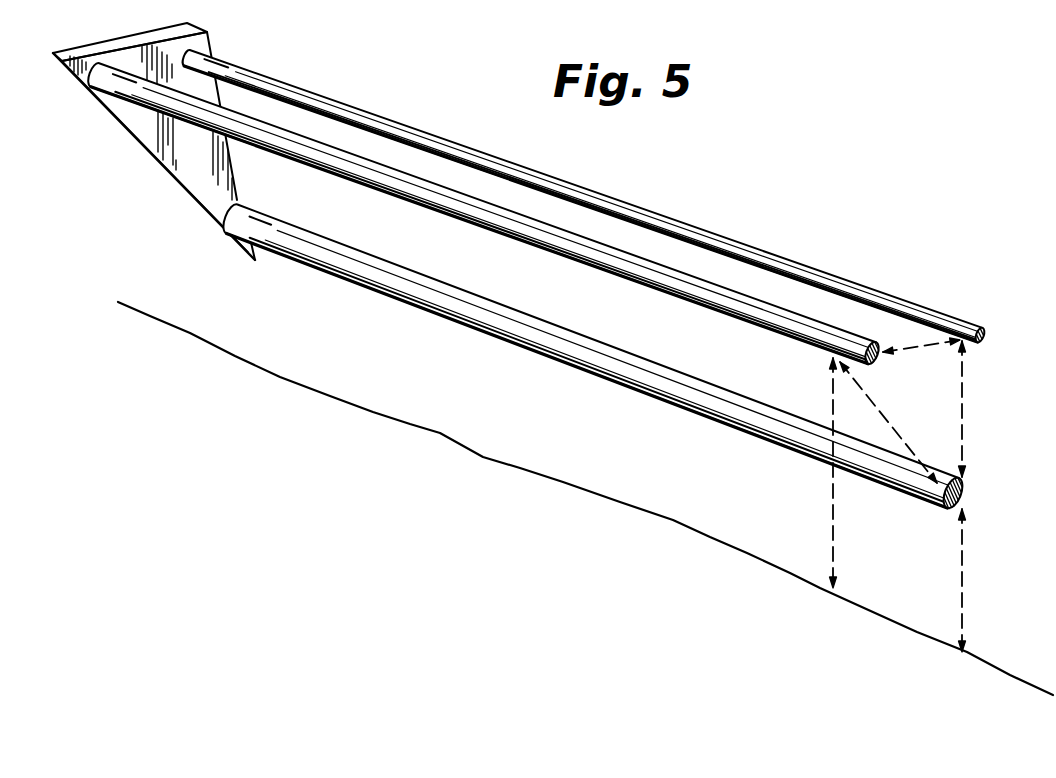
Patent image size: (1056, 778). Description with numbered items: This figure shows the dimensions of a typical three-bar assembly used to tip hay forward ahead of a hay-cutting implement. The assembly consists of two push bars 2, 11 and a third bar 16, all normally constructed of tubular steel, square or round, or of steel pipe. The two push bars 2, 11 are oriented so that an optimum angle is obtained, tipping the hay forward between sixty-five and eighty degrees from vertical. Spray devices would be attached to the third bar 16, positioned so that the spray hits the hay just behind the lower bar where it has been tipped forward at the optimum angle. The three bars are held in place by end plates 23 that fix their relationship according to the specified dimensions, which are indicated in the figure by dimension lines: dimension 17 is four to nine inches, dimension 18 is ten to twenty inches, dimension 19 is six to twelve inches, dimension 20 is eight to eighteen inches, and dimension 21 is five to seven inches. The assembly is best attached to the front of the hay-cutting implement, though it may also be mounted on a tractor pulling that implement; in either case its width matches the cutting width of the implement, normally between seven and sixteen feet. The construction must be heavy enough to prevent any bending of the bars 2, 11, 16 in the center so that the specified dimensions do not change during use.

The push bar 2 is at (593, 345).
The push bar 11 is at (477, 200).
The third bar 16 is at (606, 196).
The dimension of four to nine inches 17 is at (970, 580).
The dimension of ten to twenty inches 18 is at (838, 473).
The dimension of six to twelve inches 19 is at (888, 422).
The dimension of eight to eighteen inches 20 is at (965, 409).
The dimension of five to seven inches 21 is at (921, 338).
The end plate 23 is at (154, 141).